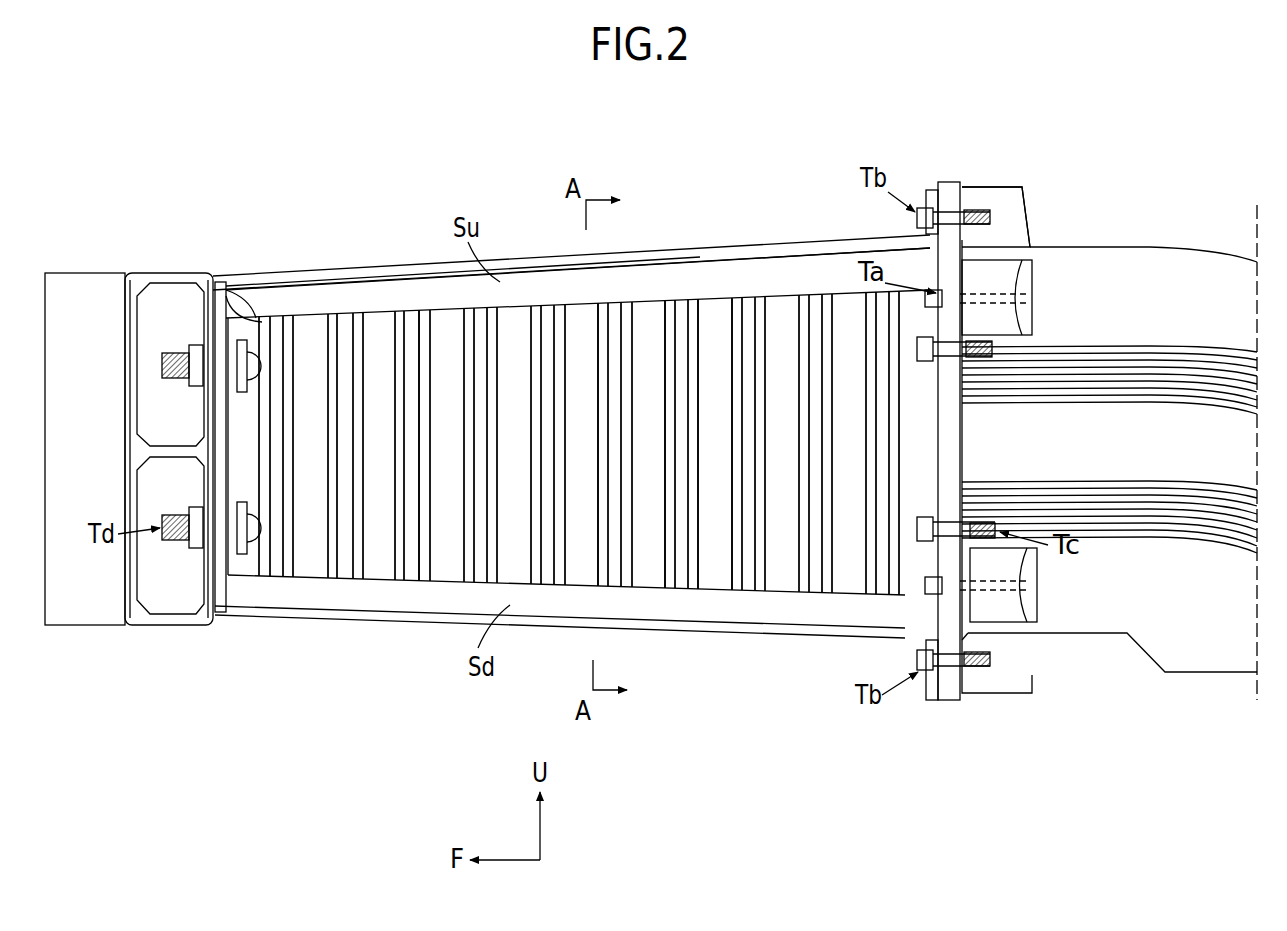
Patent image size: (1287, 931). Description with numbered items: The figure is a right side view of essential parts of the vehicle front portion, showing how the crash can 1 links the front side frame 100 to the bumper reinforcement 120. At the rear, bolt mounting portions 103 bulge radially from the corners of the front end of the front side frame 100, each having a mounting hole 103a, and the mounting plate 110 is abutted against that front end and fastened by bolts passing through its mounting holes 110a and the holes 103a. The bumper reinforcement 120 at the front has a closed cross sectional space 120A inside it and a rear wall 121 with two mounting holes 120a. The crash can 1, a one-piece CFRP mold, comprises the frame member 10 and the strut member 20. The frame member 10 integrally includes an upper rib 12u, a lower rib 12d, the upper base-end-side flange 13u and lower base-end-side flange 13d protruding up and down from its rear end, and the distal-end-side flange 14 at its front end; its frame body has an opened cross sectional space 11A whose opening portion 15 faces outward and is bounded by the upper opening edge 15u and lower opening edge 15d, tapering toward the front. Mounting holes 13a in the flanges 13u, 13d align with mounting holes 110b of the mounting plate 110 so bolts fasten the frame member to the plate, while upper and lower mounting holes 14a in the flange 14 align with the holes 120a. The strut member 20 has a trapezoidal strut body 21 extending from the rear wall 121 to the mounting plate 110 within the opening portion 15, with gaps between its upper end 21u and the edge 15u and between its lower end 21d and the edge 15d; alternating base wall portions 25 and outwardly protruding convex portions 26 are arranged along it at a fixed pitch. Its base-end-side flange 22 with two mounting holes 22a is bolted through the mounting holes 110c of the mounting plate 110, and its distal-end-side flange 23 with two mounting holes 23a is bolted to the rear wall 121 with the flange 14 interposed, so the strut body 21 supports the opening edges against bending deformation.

The crash can 1 is at (318, 198).
The frame member 10 is at (392, 265).
The opened cross sectional space 11A is at (342, 300).
The upper rib 12u is at (730, 250).
The lower rib 12d is at (800, 645).
The upper base-end-side flange 13u is at (926, 200).
The lower base-end-side flange 13d is at (924, 682).
The mounting hole 13a is at (917, 218).
The distal-end-side flange 14 is at (240, 300).
The mounting hole 14a is at (232, 515).
The opening portion 15 is at (735, 612).
The upper opening edge 15u is at (755, 268).
The lower opening edge 15d is at (566, 601).
The strut member 20 is at (579, 443).
The strut body 21 is at (775, 592).
The upper end 21u is at (703, 298).
The lower end 21d is at (700, 593).
The base-end-side flange 22 is at (963, 457).
The mounting hole 22a is at (962, 400).
The distal-end-side flange 23 is at (255, 447).
The mounting hole 23a is at (220, 535).
The base wall portion 25 is at (586, 575).
The convex portion 26 is at (418, 580).
The front side frame 100 is at (1145, 688).
The bolt mounting portion 103 is at (1030, 243).
The mounting hole 103a is at (1020, 300).
The mounting plate 110 is at (975, 495).
The mounting hole 110a is at (940, 291).
The mounting hole 110b is at (975, 210).
The mounting hole 110c is at (1000, 347).
The bumper reinforcement 120 is at (96, 628).
The mounting hole 120a is at (215, 520).
The closed cross sectional space 120A is at (167, 605).
The rear wall 121 is at (232, 292).